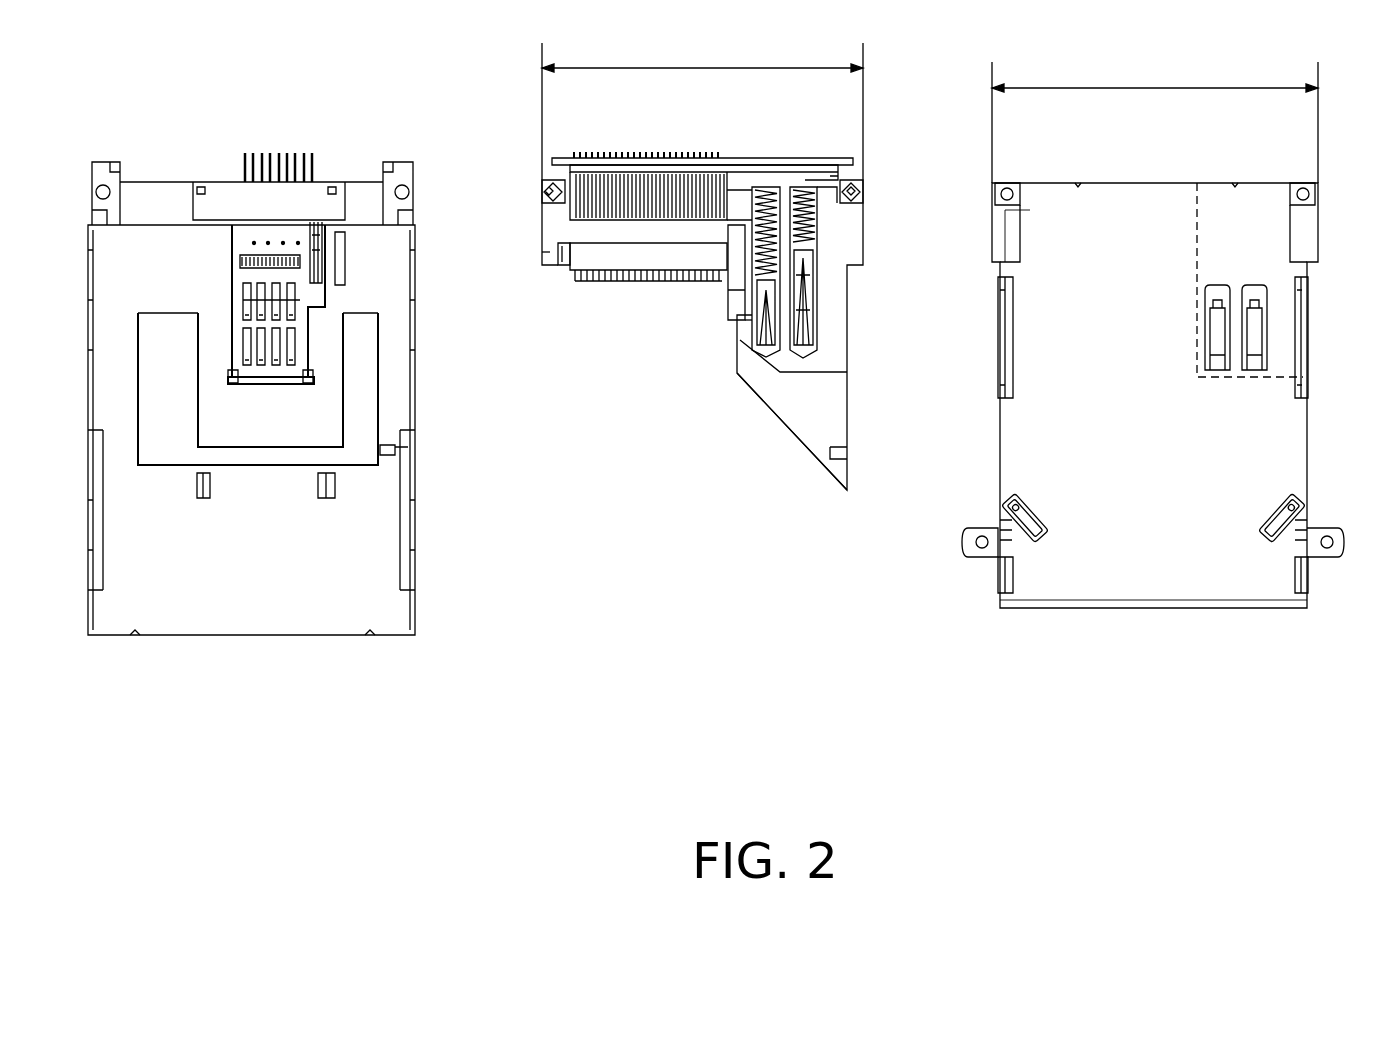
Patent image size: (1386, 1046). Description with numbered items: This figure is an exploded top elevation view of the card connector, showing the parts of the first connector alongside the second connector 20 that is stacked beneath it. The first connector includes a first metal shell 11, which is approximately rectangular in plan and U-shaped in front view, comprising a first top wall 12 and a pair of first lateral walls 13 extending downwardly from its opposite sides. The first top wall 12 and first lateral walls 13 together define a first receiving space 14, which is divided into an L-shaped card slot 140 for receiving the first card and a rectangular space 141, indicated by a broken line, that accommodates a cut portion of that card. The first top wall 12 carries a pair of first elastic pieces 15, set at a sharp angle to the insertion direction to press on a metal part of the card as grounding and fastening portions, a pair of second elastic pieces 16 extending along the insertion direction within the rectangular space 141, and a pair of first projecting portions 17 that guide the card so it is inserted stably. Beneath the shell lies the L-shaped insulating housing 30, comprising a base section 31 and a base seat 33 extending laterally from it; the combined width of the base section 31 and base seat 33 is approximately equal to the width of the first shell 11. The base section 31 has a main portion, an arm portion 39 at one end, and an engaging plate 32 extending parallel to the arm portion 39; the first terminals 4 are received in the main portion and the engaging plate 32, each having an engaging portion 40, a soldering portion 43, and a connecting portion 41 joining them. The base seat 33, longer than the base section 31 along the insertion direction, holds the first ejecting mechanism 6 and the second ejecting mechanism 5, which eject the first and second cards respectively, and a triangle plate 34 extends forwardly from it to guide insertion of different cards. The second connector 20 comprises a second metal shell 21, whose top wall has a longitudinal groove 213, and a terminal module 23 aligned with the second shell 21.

The second connector 20 is at (112, 263).
The second metal shell 21 is at (215, 573).
The terminal module 23 is at (245, 233).
The longitudinal groove 213 is at (350, 260).
The insulating housing 30 is at (735, 195).
The base section 31 is at (590, 230).
The engaging plate 32 is at (588, 255).
The base seat 33 is at (835, 225).
The triangle plate 34 is at (818, 447).
The arm portion 39 is at (540, 250).
The first terminals 4 is at (597, 190).
The engaging portion 40 is at (645, 275).
The connecting portion 41 is at (673, 200).
The soldering portion 43 is at (615, 160).
The second ejecting mechanism 5 is at (812, 280).
The first ejecting mechanism 6 is at (763, 283).
The first metal shell 11 is at (1257, 197).
The first top wall 12 is at (1240, 438).
The first lateral walls 13 is at (1312, 422).
The first receiving space 14 is at (1068, 578).
The first elastic pieces 15 is at (1275, 528).
The second elastic pieces 16 is at (1257, 328).
The first projecting portions 17 is at (1008, 360).
The card slot 140 is at (1043, 210).
The rectangular space 141 is at (1220, 220).